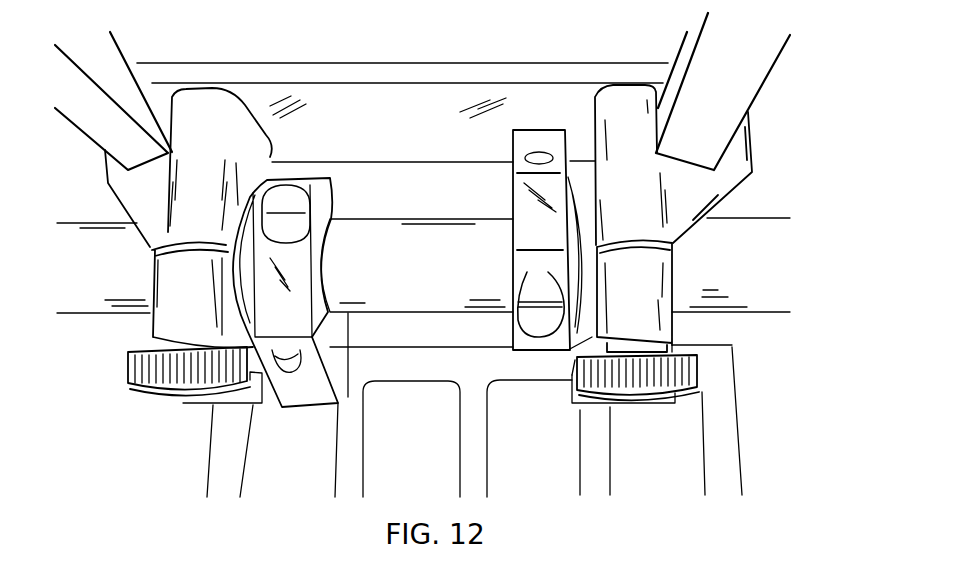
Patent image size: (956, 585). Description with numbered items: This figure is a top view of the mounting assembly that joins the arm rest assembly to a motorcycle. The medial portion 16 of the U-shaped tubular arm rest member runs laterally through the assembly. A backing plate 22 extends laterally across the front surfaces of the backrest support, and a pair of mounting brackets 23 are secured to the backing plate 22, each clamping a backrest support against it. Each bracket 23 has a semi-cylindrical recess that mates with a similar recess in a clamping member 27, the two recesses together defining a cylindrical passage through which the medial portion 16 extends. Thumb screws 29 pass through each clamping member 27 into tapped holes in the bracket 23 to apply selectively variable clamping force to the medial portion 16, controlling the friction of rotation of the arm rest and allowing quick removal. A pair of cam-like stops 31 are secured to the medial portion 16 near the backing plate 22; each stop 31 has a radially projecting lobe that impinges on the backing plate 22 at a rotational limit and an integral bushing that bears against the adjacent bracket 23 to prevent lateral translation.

The medial portion 16 is at (452, 267).
The backing plate 22 is at (338, 140).
The mounting bracket 23 is at (135, 193).
The clamping member 27 is at (170, 322).
The thumb screw 29 is at (158, 390).
The cam-like stop 31 is at (337, 387).